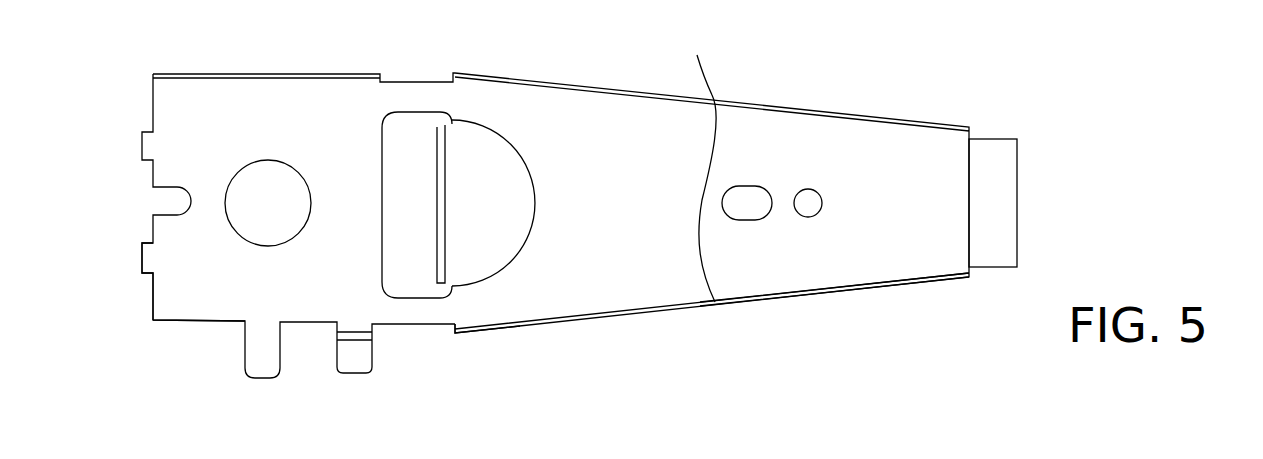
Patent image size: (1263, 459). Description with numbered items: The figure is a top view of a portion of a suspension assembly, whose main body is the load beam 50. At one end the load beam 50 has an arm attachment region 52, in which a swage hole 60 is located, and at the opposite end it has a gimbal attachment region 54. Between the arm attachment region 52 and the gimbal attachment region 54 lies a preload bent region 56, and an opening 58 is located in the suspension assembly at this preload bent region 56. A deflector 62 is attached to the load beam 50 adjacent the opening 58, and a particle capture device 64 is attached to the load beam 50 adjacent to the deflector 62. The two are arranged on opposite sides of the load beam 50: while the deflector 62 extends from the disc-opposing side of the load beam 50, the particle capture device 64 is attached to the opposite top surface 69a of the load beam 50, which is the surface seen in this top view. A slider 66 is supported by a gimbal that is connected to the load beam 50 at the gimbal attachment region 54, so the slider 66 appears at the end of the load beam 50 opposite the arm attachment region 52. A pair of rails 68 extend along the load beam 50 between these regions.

The load beam 50 is at (766, 320).
The arm attachment region 52 is at (176, 335).
The gimbal attachment region 54 is at (921, 292).
The preload bent region 56 is at (442, 328).
The opening 58 is at (385, 222).
The swage hole 60 is at (242, 165).
The deflector 62 is at (437, 128).
The particle capture device 64 is at (478, 143).
The slider 66 is at (1029, 137).
The rails 68 is at (700, 165).
The top surface 69a is at (594, 252).